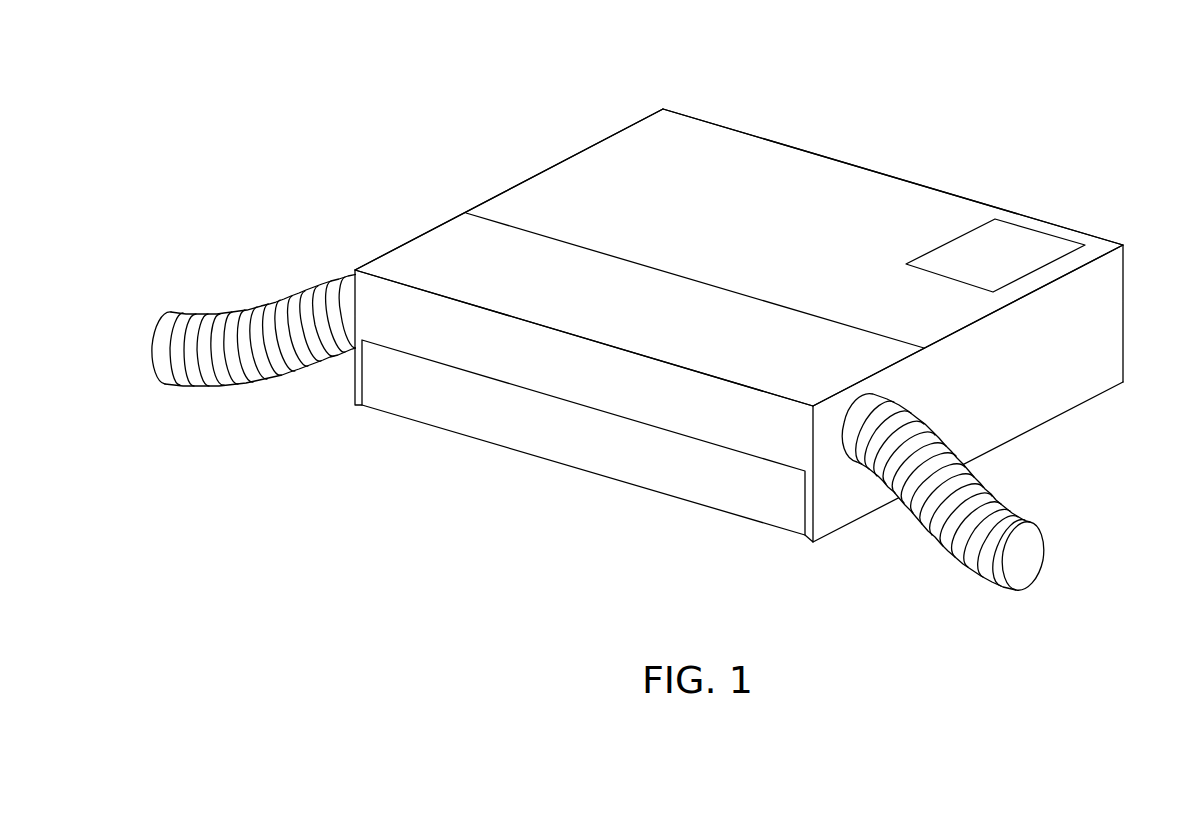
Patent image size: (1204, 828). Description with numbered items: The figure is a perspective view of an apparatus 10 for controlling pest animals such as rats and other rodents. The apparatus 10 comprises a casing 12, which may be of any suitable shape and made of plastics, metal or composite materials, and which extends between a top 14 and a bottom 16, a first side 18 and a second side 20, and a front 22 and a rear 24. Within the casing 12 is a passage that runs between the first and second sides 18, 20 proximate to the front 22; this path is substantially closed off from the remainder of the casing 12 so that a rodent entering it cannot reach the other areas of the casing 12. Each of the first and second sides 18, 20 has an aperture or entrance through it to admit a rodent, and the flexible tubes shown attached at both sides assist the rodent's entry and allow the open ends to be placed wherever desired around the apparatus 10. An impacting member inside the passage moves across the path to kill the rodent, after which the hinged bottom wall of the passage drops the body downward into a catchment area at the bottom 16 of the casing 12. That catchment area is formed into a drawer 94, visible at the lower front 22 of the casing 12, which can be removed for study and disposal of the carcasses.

The apparatus 10 is at (888, 103).
The casing 12 is at (687, 143).
The top 14 is at (938, 230).
The bottom 16 is at (1068, 415).
The first side 18 is at (540, 162).
The second side 20 is at (1098, 332).
The front 22 is at (782, 450).
The rear 24 is at (1092, 235).
The drawer 94 is at (437, 413).